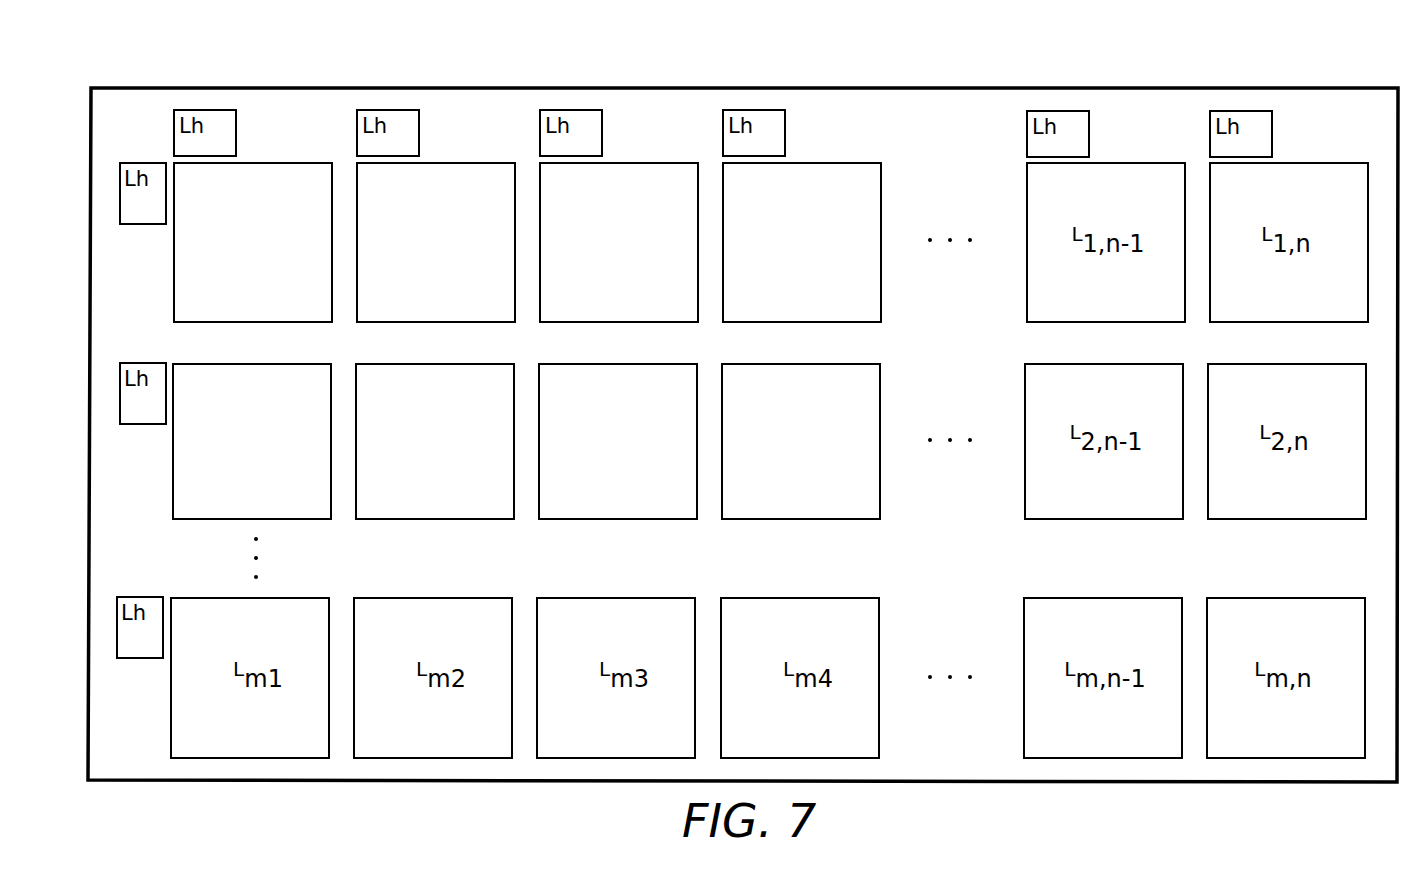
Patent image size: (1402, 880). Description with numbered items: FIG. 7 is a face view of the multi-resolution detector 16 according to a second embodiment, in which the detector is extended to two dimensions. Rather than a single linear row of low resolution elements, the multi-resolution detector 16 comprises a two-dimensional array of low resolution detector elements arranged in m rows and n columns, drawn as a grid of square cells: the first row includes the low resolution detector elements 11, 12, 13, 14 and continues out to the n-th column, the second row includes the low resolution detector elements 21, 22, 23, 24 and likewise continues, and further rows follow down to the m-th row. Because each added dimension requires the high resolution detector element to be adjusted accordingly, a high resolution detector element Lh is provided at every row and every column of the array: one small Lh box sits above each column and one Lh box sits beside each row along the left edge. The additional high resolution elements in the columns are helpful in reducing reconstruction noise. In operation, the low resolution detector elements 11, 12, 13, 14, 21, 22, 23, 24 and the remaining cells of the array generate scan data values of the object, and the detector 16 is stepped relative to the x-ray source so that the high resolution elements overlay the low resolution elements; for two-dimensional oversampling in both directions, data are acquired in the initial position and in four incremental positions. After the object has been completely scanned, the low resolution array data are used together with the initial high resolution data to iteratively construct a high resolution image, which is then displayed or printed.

The multi-resolution detector 16 is at (226, 82).
The light emitting block L11 11 is at (253, 242).
The x-ray source 12 is at (436, 242).
The light emitting block L13 13 is at (619, 242).
The object 14 is at (802, 242).
The light emitting block L21 21 is at (252, 441).
The reconstructor processor 22 is at (435, 441).
The light emitting block L23 23 is at (618, 441).
The display screen 24 is at (801, 441).